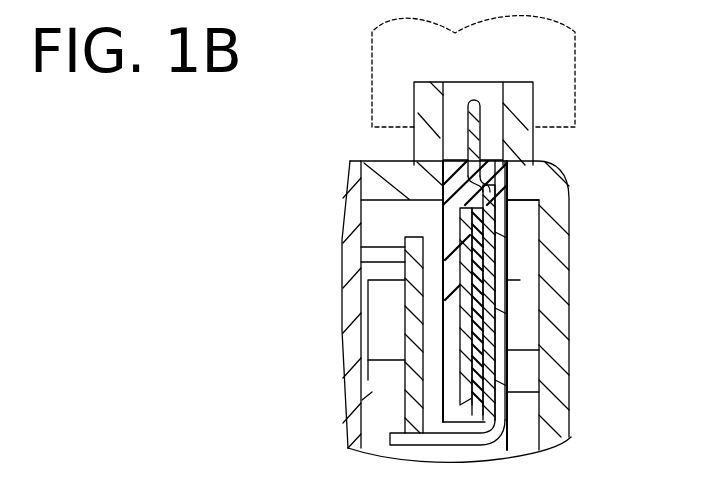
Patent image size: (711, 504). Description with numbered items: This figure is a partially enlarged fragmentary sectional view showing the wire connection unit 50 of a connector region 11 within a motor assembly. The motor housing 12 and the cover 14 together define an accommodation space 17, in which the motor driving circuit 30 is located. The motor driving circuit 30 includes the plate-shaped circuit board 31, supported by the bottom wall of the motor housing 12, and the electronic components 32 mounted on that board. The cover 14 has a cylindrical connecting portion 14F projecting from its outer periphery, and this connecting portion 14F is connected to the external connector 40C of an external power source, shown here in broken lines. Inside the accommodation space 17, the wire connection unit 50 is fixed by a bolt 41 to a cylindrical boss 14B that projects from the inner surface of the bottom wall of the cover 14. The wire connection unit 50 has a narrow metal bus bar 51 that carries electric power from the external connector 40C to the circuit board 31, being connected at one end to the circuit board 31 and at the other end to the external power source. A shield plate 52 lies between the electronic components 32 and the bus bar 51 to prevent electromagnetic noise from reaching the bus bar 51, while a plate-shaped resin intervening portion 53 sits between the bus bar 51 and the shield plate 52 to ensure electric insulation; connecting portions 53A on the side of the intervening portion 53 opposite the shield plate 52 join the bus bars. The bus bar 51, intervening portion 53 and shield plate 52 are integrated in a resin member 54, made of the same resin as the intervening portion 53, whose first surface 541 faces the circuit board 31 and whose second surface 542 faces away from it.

The connector 11 is at (348, 158).
The motor housing 12 is at (350, 180).
The cover 14 is at (560, 185).
The cylindrical boss 14B is at (530, 362).
The cylindrical connecting portion 14F is at (535, 98).
The accommodation space 17 is at (528, 413).
The motor driving circuit 30 is at (438, 440).
The circuit board 31 is at (405, 408).
The electronic components 32 is at (370, 336).
The external connector 40C is at (578, 42).
The bolt 41 is at (407, 395).
The wire connection unit 50 is at (522, 178).
The bus bar 51 is at (510, 335).
The shield plate 52 is at (443, 230).
The intervening portion 53 is at (510, 255).
The connecting portions 53A is at (510, 382).
The resin member 54 is at (425, 170).
The first surface 541 is at (405, 292).
The second surface 542 is at (515, 278).